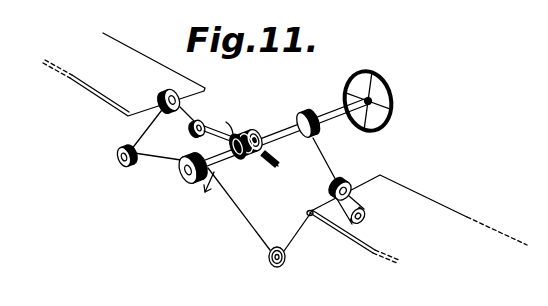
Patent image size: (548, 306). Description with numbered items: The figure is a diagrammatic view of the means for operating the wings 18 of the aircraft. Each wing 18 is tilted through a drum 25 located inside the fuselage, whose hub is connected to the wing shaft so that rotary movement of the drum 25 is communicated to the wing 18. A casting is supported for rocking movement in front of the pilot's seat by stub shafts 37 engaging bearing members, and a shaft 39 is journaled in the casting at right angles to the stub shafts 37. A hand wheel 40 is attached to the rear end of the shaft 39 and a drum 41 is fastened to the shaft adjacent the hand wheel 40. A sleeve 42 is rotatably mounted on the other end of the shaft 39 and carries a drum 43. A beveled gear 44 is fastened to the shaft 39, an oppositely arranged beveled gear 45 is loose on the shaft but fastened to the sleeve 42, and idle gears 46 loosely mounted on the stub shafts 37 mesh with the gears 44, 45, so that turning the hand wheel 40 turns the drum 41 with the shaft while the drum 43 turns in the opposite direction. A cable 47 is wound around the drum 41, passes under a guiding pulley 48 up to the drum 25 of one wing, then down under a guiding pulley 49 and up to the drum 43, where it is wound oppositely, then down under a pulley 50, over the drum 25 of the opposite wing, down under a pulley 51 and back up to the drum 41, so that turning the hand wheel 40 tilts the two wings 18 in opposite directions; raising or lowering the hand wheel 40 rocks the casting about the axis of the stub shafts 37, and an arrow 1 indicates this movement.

The direction arrow 1 is at (209, 182).
The wing 18 is at (107, 85).
The drum 25 is at (164, 97).
The stub shaft 37 is at (268, 163).
The shaft 39 is at (332, 101).
The hand wheel 40 is at (384, 92).
The drum 41 is at (305, 118).
The sleeve 42 is at (247, 157).
The drum 43 is at (188, 181).
The beveled gear 44 is at (251, 133).
The beveled gear 45 is at (229, 141).
The idle gear 46 is at (289, 155).
The cable 47 is at (226, 124).
The guiding pulley 48 is at (192, 130).
The guiding pulley 49 is at (119, 165).
The pulley 50 is at (268, 256).
The pulley 51 is at (366, 214).